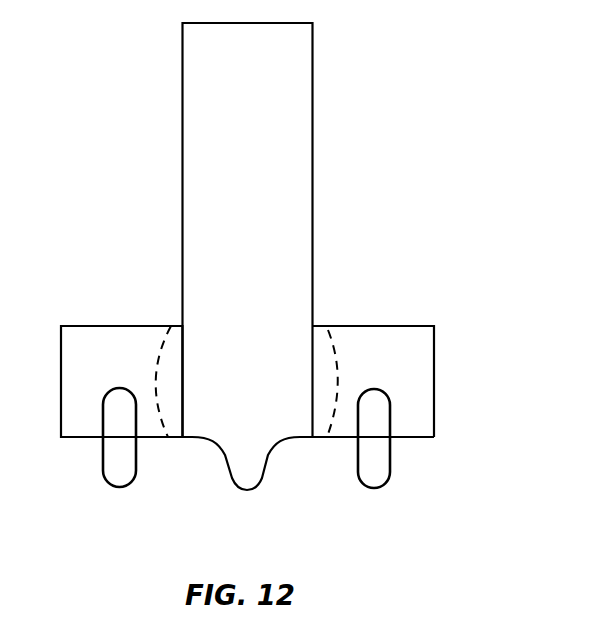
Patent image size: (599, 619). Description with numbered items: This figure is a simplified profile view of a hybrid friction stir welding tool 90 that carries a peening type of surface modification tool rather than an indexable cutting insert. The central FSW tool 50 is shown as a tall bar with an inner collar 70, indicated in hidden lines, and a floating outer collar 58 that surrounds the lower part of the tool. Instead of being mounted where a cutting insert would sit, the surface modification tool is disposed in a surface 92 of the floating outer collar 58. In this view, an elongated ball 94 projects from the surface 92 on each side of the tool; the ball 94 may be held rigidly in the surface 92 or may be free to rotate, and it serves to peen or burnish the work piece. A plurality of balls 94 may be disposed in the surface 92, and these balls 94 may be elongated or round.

The FSW tool 50 is at (293, 199).
The hybrid friction stir welding tool 90 is at (382, 254).
The inner collar 70 is at (172, 338).
The floating outer collar 58 is at (410, 376).
The surface 92 is at (413, 439).
The elongated ball 94 is at (116, 460).